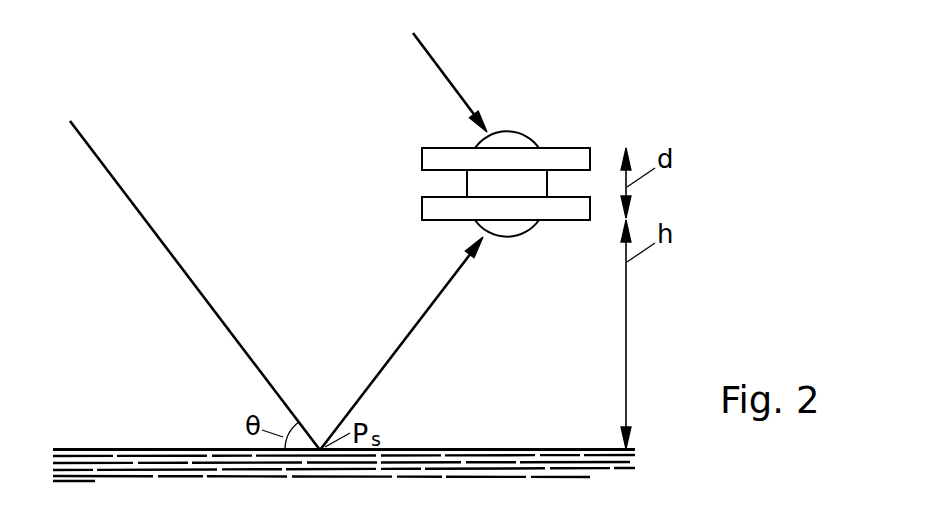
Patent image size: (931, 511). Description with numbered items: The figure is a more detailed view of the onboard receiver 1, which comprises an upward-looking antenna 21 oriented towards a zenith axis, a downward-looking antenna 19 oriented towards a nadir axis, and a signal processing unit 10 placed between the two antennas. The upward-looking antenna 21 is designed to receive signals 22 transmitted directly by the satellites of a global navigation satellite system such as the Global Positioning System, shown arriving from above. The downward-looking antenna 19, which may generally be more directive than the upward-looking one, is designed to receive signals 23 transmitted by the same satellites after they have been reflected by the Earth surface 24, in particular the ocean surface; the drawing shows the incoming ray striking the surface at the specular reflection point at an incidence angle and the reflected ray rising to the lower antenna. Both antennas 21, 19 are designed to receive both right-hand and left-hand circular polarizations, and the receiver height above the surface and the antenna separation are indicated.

The receiver 1 is at (510, 174).
The signal processing unit 10 is at (477, 183).
The downward-looking antenna 19 is at (448, 220).
The upward-looking antenna 21 is at (448, 150).
The signals transmitted directly by satellites 22 is at (468, 100).
The reflected signals 23 is at (243, 340).
The Earth surface 24 is at (108, 449).